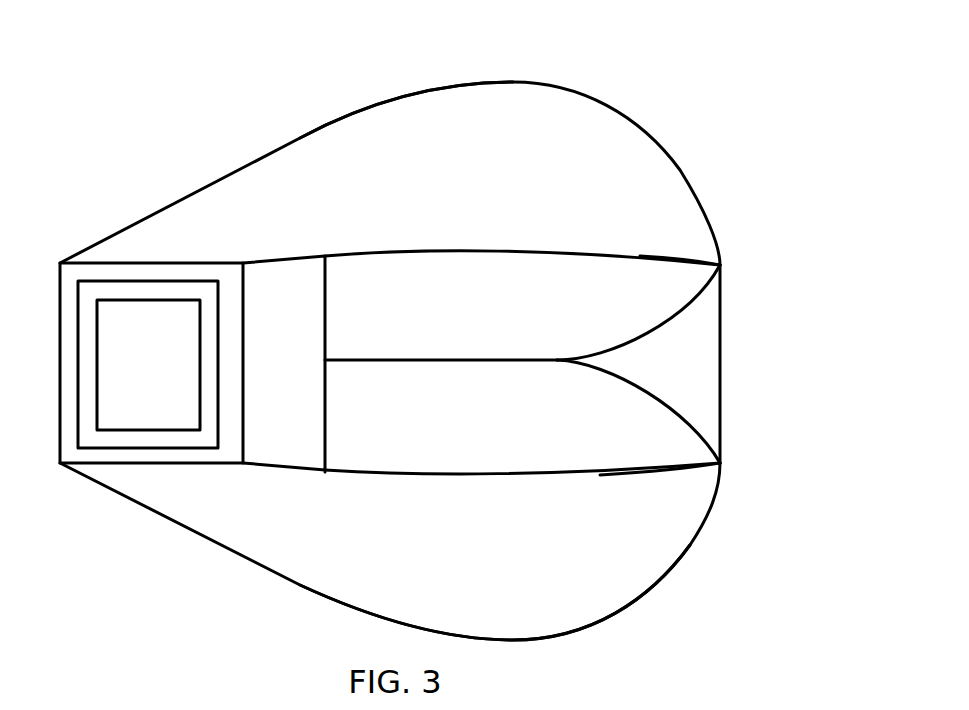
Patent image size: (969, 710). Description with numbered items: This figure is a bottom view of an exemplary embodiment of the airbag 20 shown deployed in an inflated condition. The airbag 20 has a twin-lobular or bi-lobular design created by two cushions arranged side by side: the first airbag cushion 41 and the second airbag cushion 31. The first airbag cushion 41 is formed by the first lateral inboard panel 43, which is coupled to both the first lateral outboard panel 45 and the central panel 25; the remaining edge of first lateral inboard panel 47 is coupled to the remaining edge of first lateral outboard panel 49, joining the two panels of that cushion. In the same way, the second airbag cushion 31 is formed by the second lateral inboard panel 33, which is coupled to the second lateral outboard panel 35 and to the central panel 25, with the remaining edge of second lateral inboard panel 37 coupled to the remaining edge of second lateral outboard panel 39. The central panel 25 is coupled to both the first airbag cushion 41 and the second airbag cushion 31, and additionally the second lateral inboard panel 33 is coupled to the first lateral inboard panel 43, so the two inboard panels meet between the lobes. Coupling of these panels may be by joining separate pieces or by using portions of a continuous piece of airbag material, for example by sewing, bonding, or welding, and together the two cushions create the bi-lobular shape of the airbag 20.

The airbag 20 is at (170, 109).
The central panel 25 is at (273, 295).
The second airbag cushion 31 is at (704, 590).
The second lateral inboard panel 33 is at (623, 452).
The second lateral outboard panel 35 is at (528, 590).
The remaining edge of second lateral inboard panel 37 is at (518, 470).
The remaining edge of second lateral outboard panel 39 is at (630, 473).
The first airbag cushion 41 is at (650, 88).
The first lateral inboard panel 43 is at (595, 258).
The first lateral outboard panel 45 is at (423, 112).
The remaining edge of first lateral inboard panel 47 is at (533, 238).
The remaining edge of first lateral outboard panel 49 is at (595, 253).